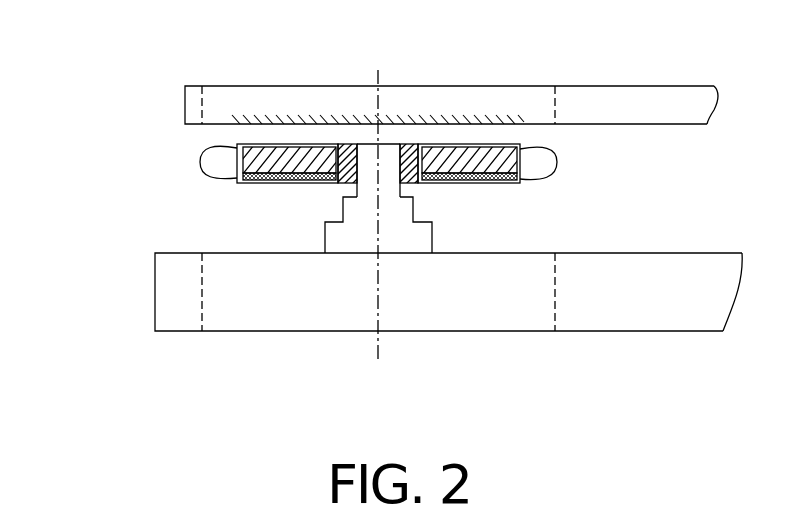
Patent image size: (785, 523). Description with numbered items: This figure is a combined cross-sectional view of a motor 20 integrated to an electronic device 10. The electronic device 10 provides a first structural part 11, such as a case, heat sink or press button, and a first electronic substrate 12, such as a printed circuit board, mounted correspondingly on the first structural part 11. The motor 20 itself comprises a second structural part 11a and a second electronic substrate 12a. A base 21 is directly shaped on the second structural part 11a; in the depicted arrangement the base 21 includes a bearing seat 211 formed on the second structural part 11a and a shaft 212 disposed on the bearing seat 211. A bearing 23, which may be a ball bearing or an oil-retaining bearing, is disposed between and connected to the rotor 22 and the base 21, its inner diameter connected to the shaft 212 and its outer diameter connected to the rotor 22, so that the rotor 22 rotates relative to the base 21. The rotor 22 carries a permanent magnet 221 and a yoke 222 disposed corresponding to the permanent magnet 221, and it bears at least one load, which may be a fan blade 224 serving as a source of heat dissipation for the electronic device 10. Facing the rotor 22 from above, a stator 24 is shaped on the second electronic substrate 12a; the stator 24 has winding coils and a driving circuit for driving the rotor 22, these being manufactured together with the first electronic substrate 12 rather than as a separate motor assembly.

The electronic device 10 is at (88, 75).
The first structural part 11 is at (421, 332).
The second structural part 11a is at (300, 312).
The first electronic substrate 12 is at (410, 88).
The second electronic substrate 12a is at (268, 95).
The motor 20 is at (410, 186).
The base 21 is at (312, 198).
The bearing seat 211 is at (352, 212).
The shaft 212 is at (370, 181).
The rotor 22 is at (394, 164).
The permanent magnet 221 is at (247, 149).
The yoke 222 is at (255, 178).
The fan blade 224 is at (210, 159).
The bearing 23 is at (410, 160).
The stator 24 is at (468, 124).